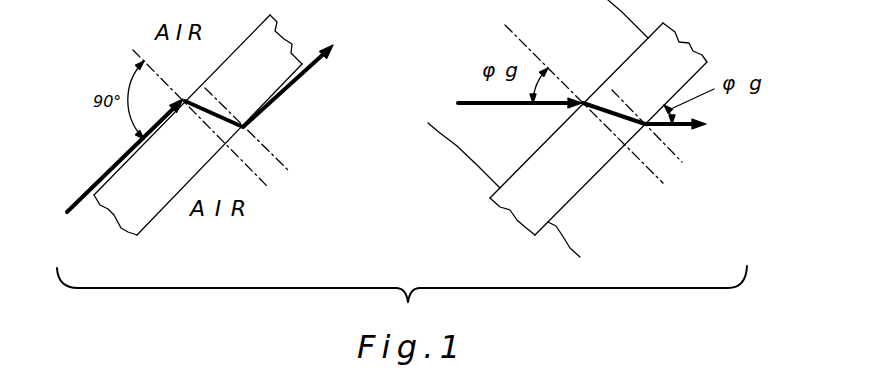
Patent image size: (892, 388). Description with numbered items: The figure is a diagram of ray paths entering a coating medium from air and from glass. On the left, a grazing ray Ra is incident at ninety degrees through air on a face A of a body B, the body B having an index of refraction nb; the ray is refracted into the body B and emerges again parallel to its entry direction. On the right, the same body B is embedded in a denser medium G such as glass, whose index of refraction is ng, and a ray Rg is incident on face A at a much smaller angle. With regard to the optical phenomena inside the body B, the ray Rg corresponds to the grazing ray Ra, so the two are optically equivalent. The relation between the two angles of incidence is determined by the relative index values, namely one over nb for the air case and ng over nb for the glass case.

The face A is at (246, 39).
The body B is at (400, 125).
The grazing ray Ra is at (100, 179).
The ray Rg is at (470, 101).
The denser medium G is at (597, 128).
The index of refraction nb is at (463, 61).
The index of refraction ng is at (636, 84).